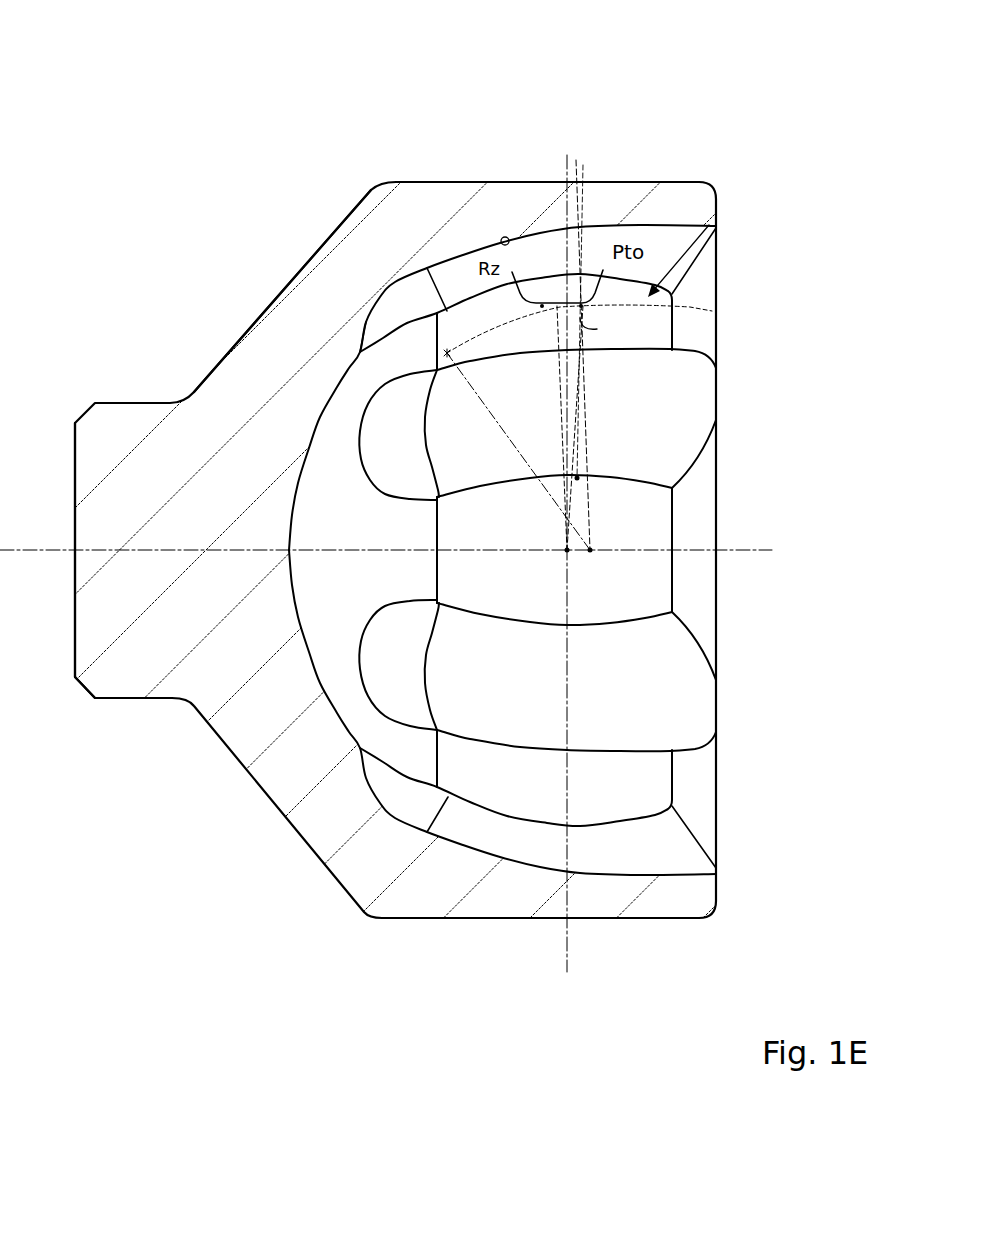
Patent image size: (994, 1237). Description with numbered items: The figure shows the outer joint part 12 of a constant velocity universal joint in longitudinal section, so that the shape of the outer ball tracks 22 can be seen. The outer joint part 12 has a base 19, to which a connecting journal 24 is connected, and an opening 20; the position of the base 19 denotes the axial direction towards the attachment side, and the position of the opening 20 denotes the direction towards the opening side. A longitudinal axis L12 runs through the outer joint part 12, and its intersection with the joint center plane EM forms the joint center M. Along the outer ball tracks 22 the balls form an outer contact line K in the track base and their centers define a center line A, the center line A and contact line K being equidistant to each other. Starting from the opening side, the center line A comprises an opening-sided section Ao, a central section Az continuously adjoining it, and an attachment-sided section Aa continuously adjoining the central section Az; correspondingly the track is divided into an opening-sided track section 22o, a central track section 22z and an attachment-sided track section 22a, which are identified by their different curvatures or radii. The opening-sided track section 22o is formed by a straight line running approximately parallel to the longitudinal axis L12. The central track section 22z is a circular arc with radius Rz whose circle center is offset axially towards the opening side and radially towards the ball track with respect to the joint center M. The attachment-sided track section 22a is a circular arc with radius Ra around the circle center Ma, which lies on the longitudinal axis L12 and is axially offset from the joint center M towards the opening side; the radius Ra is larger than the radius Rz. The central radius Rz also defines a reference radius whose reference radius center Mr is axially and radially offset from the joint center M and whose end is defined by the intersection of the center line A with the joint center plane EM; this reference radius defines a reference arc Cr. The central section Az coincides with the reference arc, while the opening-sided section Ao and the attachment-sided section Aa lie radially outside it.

The outer joint part 12 is at (450, 82).
The base 19 is at (267, 337).
The opening 20 is at (744, 836).
The outer ball tracks 22 is at (677, 703).
The attachment-sided track section 22a is at (460, 250).
The opening-sided track section 22o is at (667, 245).
The central track section 22z is at (577, 250).
The connecting journal 24 is at (122, 683).
The longitudinal axis L12 is at (103, 550).
The outer contact line K is at (500, 236).
The center line A is at (709, 225).
The opening-sided section Ao is at (688, 307).
The attachment-sided section Aa is at (468, 340).
The central section Az is at (543, 302).
The reference arc Cr is at (603, 327).
The radius of central track section Rz is at (582, 363).
The radius of attachment-sided track section Ra is at (548, 344).
The reference radius center Mr is at (582, 472).
The joint center M is at (560, 558).
The circle center of attachment-sided track section Ma is at (594, 556).
The joint center plane EM is at (567, 962).